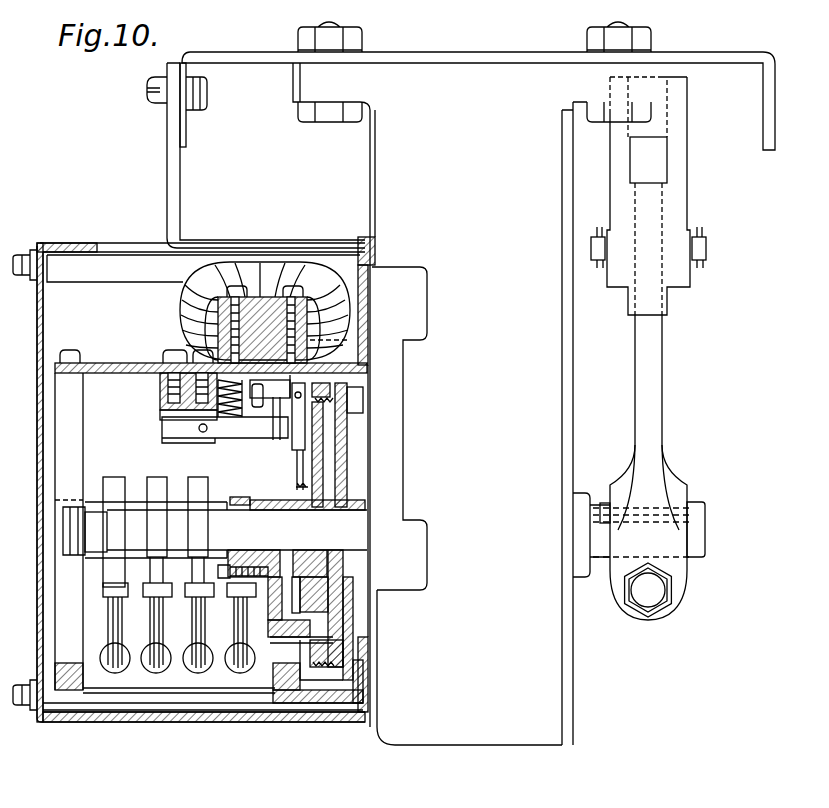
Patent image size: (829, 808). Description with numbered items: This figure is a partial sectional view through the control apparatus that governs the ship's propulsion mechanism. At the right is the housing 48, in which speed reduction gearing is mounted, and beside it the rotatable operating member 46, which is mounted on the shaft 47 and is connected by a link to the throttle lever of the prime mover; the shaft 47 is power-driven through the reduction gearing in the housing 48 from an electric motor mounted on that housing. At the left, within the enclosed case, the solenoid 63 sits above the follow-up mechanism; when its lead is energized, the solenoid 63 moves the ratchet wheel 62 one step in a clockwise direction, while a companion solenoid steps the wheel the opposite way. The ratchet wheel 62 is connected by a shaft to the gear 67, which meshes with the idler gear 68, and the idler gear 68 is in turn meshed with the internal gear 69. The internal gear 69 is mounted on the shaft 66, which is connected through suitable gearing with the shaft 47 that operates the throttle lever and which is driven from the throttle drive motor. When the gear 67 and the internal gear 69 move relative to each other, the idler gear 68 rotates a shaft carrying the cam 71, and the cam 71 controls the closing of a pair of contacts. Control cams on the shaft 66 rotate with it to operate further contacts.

The rotatable operating member 46 is at (658, 400).
The shaft 47 is at (705, 528).
The housing 48 is at (573, 660).
The ratchet wheel 62 is at (303, 470).
The solenoid 63 is at (187, 297).
The shaft 66 is at (337, 517).
The gear 67 is at (325, 605).
The idler gear 68 is at (333, 642).
The internal gear 69 is at (343, 440).
The cam 71 is at (247, 499).